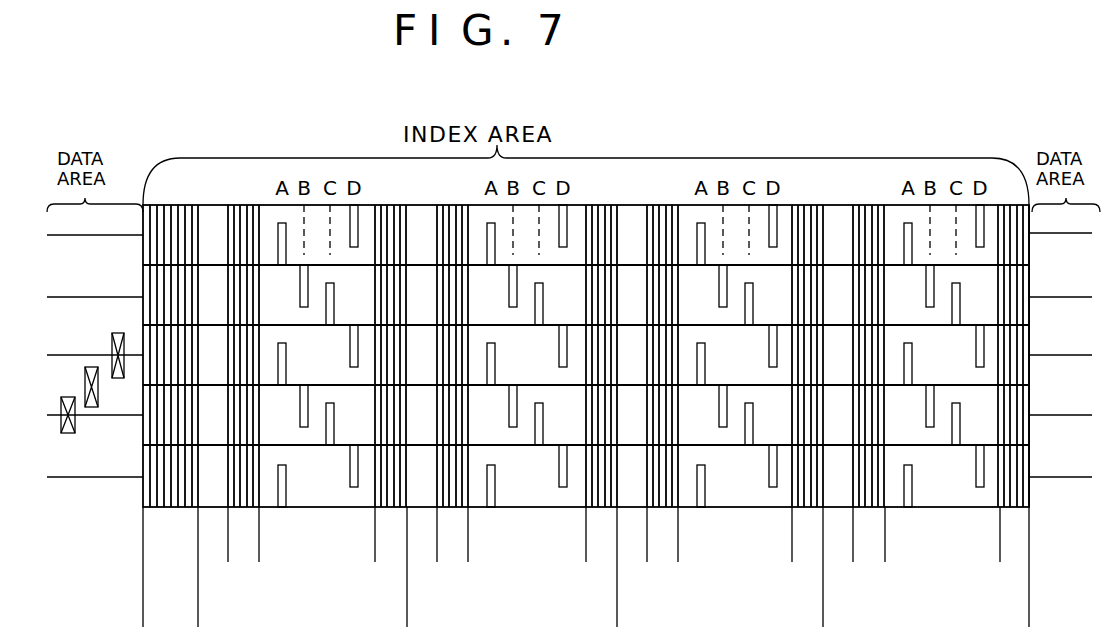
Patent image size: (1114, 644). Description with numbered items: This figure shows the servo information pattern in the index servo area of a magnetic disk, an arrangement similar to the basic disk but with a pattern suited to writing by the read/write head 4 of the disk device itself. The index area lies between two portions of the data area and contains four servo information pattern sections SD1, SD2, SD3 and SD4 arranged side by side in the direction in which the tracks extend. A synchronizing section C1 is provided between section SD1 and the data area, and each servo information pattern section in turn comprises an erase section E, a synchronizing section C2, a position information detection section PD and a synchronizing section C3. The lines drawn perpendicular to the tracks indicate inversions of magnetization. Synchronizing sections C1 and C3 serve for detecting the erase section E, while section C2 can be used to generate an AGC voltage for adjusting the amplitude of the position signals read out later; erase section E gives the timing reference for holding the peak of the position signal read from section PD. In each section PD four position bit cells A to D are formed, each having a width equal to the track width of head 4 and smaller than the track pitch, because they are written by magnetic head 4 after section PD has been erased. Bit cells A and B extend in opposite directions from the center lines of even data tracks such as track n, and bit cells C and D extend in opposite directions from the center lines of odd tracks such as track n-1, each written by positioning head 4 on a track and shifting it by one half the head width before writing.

The magnetic head 4 is at (77, 433).
The synchronizing section C1 is at (198, 557).
The synchronizing section C2 is at (556, 381).
The synchronizing section C3 is at (702, 381).
The erase section E is at (599, 534).
The position information detection section PD is at (629, 366).
The servo information pattern section SD1 is at (407, 617).
The servo information pattern section SD2 is at (617, 617).
The servo information pattern section SD3 is at (823, 617).
The servo information pattern section SD4 is at (1029, 617).
The data track n is at (569, 394).
The data track n-1 is at (569, 459).